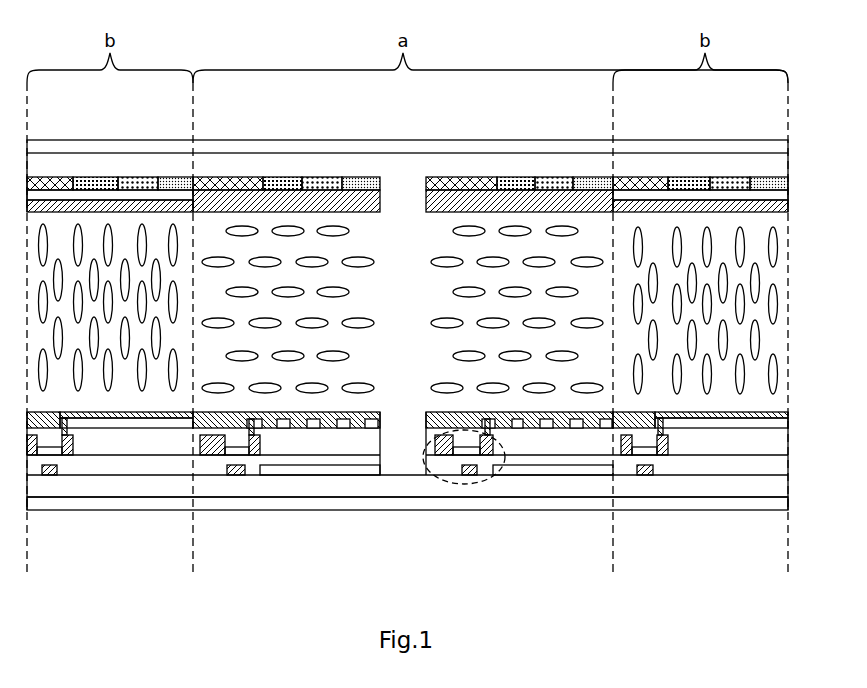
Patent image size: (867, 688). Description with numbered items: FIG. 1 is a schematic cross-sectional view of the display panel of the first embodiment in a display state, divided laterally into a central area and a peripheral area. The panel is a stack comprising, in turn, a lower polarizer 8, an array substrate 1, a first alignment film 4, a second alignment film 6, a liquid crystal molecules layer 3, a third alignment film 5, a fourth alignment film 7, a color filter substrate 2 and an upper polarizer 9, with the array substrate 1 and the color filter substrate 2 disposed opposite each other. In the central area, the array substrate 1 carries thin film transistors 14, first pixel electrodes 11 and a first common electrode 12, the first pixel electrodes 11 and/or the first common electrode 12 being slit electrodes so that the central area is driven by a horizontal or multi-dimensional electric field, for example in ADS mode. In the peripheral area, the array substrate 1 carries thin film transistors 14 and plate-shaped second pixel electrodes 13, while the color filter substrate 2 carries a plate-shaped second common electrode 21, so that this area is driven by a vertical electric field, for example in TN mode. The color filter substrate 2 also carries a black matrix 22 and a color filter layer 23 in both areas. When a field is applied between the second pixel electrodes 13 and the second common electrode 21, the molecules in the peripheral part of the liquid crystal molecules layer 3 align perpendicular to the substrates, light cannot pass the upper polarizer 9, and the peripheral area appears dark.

The array substrate 1 is at (423, 485).
The color filter substrate 2 is at (422, 146).
The liquid crystal molecules layer 3 is at (793, 212).
The first alignment film 4 is at (333, 428).
The third alignment film 5 is at (327, 200).
The second alignment film 6 is at (116, 412).
The fourth alignment film 7 is at (120, 206).
The lower polarizer 8 is at (773, 505).
The upper polarizer 9 is at (775, 146).
The first pixel electrode 11 is at (543, 428).
The first common electrode 12 is at (602, 465).
The second pixel electrode 13 is at (730, 418).
The thin film transistor 14 is at (473, 485).
The second common electrode 21 is at (682, 197).
The black matrix 22 is at (641, 190).
The color filter layer 23 is at (757, 183).